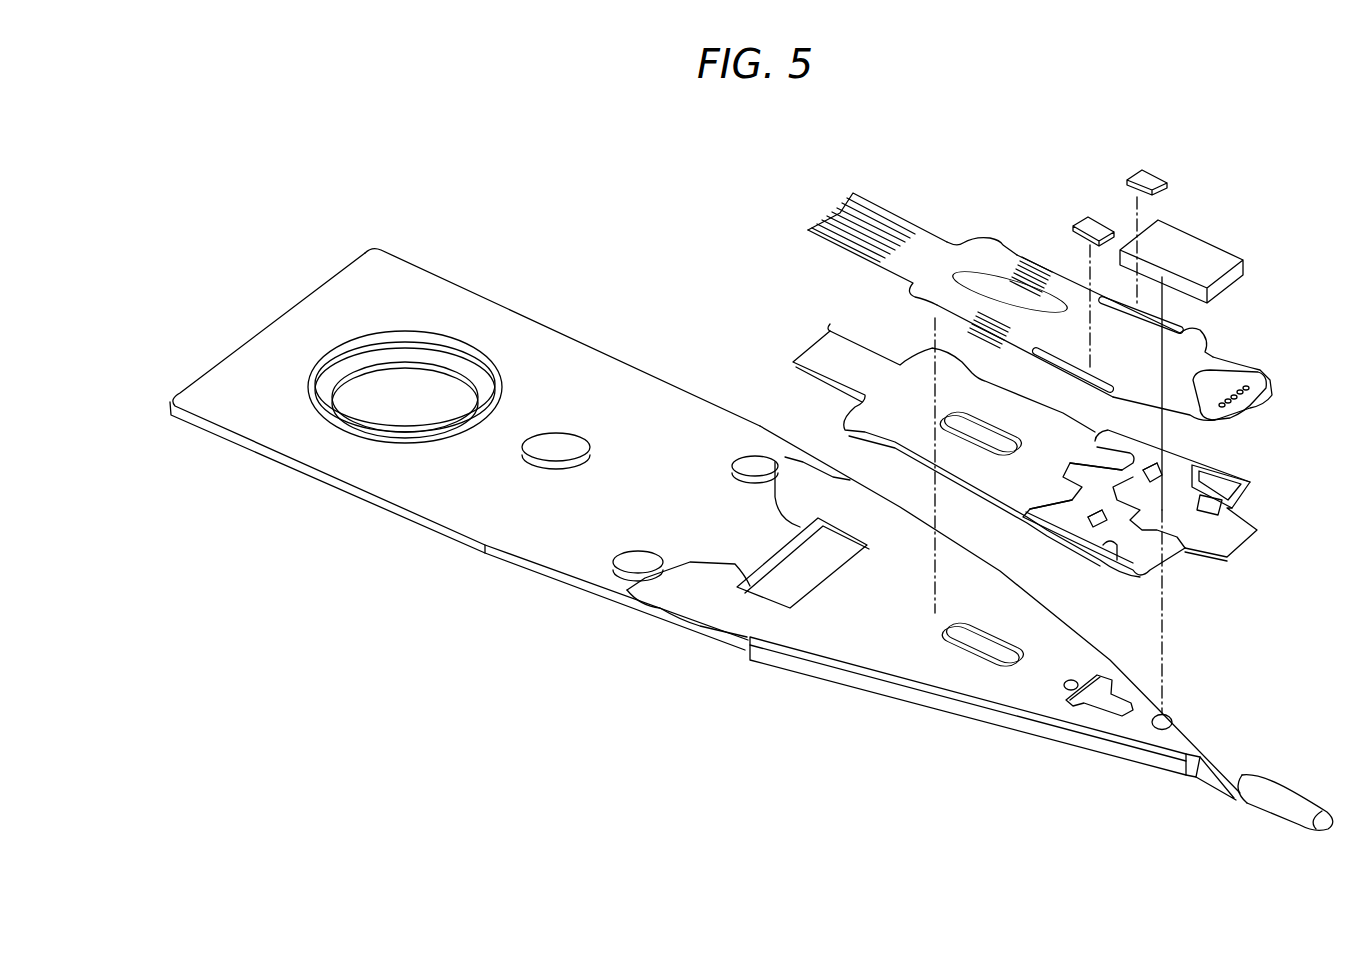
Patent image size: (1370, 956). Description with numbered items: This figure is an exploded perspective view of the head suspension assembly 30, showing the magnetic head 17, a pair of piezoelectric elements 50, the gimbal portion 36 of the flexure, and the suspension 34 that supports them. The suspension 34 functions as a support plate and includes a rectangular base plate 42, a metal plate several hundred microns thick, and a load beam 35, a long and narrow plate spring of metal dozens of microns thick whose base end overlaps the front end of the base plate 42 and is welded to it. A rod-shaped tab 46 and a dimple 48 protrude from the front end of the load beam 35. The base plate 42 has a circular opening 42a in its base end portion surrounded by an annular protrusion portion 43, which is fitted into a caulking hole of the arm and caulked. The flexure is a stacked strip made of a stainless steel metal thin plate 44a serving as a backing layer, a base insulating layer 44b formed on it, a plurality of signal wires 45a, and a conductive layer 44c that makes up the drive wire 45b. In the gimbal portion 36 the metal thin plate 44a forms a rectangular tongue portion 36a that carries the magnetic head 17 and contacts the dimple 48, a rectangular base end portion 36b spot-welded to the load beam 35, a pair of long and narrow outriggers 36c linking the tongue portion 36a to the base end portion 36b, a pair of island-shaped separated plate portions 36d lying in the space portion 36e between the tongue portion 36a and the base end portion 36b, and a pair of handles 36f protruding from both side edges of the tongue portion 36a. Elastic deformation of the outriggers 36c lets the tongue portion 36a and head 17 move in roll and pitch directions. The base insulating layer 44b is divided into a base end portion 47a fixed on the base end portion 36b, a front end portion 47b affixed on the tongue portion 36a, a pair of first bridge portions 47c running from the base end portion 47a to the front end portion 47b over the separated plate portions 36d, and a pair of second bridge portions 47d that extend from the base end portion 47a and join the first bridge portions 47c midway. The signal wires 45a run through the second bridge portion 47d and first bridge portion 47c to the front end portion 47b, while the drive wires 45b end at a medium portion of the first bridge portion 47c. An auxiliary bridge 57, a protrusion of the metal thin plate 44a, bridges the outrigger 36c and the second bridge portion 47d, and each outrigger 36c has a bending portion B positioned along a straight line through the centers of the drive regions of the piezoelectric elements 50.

The magnetic head 17 is at (1198, 247).
The suspension assembly 30 is at (759, 204).
The suspension 34 is at (556, 620).
The load beam 35 is at (883, 652).
The gimbal portion 36 is at (982, 109).
The tongue portion 36a is at (1190, 525).
The base end portion 36b is at (1043, 478).
The outriggers 36c is at (1133, 450).
The separated plate portions 36d is at (1170, 467).
The space portion 36e is at (1093, 483).
The handles 36f is at (1192, 488).
The base plate 42 is at (457, 507).
The circular opening 42a is at (415, 397).
The annular protrusion portion 43 is at (367, 362).
The metal thin plate 44a is at (870, 428).
The base insulating layer 44b is at (868, 257).
The conductive layer 44c is at (903, 243).
The signal wires 45a is at (870, 227).
The drive wire 45b is at (1027, 340).
The tab 46 is at (1287, 797).
The base end portion 47a is at (1067, 283).
The front end portion 47b is at (1257, 400).
The first bridge portion 47c is at (1145, 330).
The second bridge portion 47d is at (1170, 307).
The dimple 48 is at (1170, 716).
The piezoelectric elements 50 is at (1092, 222).
The auxiliary bridge 57 is at (1235, 470).
The bending portion B is at (1160, 443).